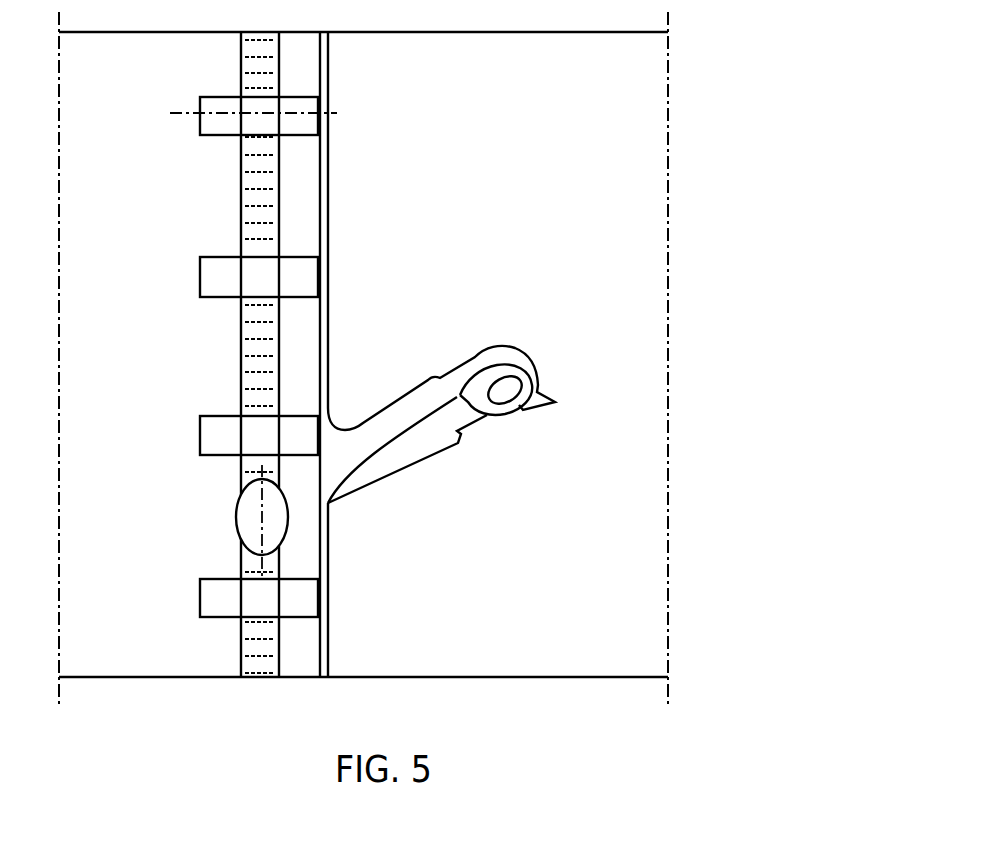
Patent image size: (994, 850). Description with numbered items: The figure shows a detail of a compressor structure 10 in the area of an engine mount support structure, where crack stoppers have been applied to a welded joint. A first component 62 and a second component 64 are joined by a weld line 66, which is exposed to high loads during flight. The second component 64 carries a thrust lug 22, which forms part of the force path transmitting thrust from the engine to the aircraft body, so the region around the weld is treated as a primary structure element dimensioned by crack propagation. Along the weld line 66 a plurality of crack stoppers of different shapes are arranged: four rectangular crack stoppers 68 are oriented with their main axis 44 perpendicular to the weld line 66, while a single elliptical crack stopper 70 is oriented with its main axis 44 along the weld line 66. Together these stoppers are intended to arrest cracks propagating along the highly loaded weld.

The compressor structure 10 is at (756, 109).
The thrust lug 22 is at (475, 373).
The main axis 44 is at (177, 112).
The first component 62 is at (128, 174).
The second component 64 is at (467, 164).
The weld line 66 is at (250, 68).
The rectangular crack stopper 68 is at (213, 128).
The elliptical crack stopper 70 is at (250, 518).